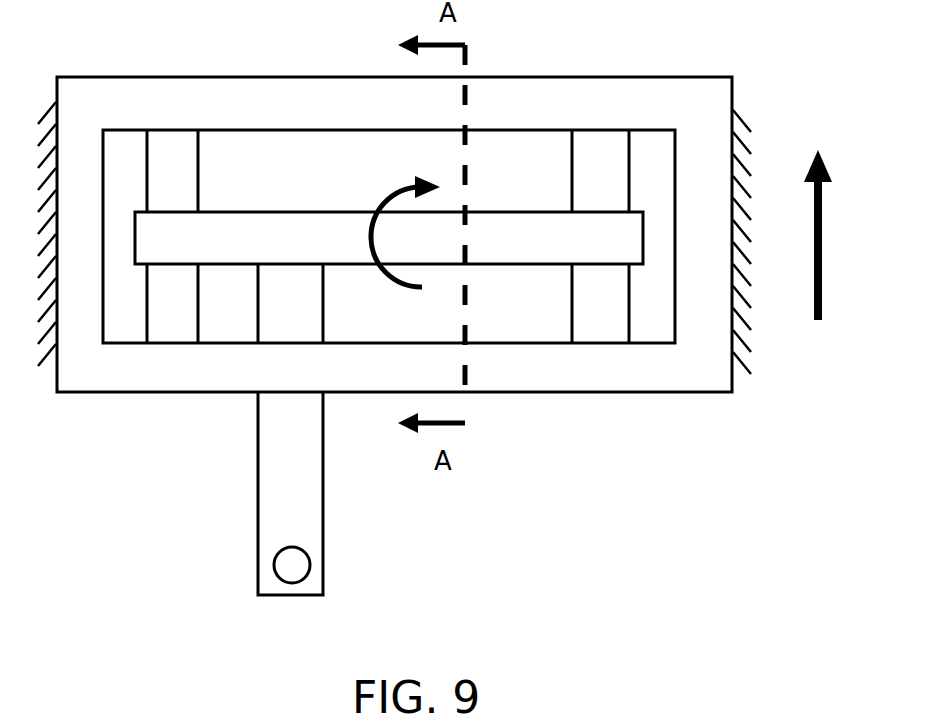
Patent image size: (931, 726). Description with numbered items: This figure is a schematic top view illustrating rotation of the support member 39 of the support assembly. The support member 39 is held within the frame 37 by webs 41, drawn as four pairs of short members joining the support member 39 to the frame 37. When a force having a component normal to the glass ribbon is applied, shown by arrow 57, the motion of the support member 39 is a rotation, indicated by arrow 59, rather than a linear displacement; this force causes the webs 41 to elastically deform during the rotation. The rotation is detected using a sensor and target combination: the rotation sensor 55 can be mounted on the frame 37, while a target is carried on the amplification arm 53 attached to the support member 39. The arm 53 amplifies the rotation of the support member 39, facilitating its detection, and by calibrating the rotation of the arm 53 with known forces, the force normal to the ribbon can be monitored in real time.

The frame 37 is at (700, 386).
The support member 39 is at (308, 228).
The web 41 is at (147, 138).
The amplification arm for rotation sensing 53 is at (302, 595).
The rotation sensor 55 is at (308, 561).
The arrow illustrating pinch force 57 is at (822, 291).
The arrow illustrating rotation of support member 59 is at (387, 280).